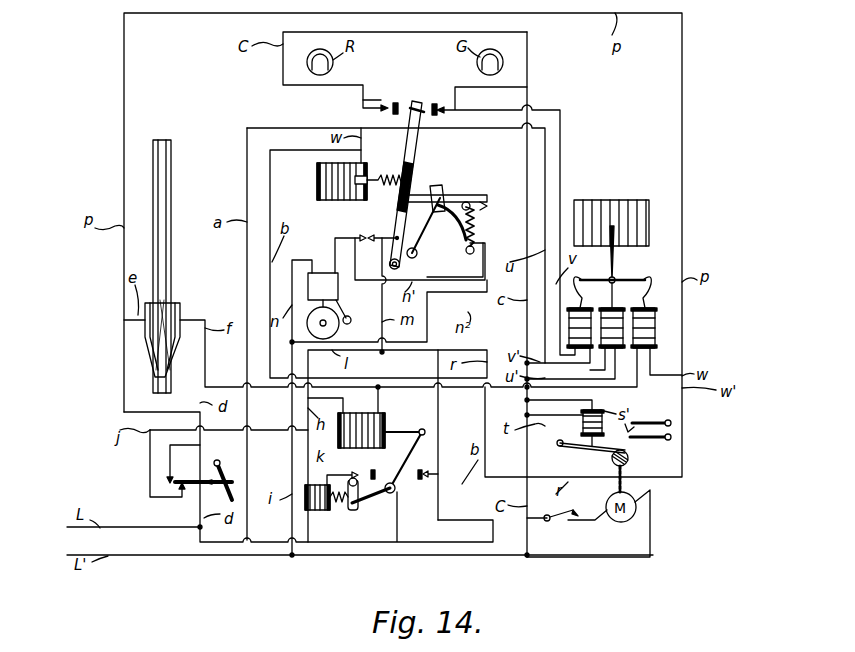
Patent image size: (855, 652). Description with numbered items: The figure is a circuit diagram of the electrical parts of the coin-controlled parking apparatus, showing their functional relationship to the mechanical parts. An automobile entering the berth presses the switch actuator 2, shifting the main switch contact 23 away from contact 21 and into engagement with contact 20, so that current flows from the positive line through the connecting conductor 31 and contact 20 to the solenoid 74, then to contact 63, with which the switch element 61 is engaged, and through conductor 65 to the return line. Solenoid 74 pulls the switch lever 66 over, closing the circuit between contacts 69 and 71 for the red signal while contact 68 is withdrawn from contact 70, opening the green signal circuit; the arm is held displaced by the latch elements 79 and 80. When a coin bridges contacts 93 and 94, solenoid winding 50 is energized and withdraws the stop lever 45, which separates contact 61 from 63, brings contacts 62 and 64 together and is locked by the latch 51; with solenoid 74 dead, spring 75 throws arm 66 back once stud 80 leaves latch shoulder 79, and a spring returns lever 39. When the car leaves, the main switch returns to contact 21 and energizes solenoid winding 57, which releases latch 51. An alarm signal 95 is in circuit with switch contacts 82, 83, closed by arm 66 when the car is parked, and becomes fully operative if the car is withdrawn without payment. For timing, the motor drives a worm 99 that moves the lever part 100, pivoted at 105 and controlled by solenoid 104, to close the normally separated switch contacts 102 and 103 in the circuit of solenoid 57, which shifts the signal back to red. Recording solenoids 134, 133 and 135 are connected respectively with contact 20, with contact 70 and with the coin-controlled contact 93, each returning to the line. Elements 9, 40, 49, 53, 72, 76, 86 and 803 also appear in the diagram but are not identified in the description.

The switch actuator 2 is at (232, 484).
The conductor 9 is at (382, 400).
The contact 20 is at (162, 478).
The main switch contact 21 is at (182, 490).
The main switch contact 23 is at (170, 498).
The connecting conductor 31 is at (150, 456).
The lever 39 is at (414, 255).
The spring anchor 40 is at (470, 252).
The stop lever 45 is at (428, 440).
The lever arm 49 is at (405, 432).
The solenoid winding 50 is at (360, 413).
The latch 51 is at (352, 512).
The lever 53 is at (372, 500).
The solenoid winding 57 is at (315, 512).
The switch element 61 is at (398, 490).
The contact 62 is at (376, 472).
The contact 63 is at (425, 476).
The contact 64 is at (350, 474).
The conductor 65 is at (397, 522).
The switch lever 66 is at (410, 153).
The contact 68 is at (424, 108).
The contact 69 is at (398, 102).
The contact 70 is at (442, 100).
The contact 71 is at (382, 106).
The conductor 72 is at (418, 118).
The solenoid 74 is at (317, 186).
The spring 75 is at (381, 175).
The bar 76 is at (470, 196).
The latch shoulder 79 is at (436, 180).
The stud 80 is at (460, 232).
The switch contact 82 is at (382, 234).
The switch contact 83 is at (350, 234).
The tube 86 is at (160, 282).
The contact 93 is at (170, 355).
The contact 94 is at (148, 348).
The alarm signal 95 is at (340, 312).
The worm 99 is at (628, 462).
The lever part 100 is at (600, 450).
The switch contact 102 is at (640, 441).
The switch contact 103 is at (668, 427).
The solenoid 104 is at (583, 428).
The pivot 105 is at (560, 448).
The solenoid 133 is at (569, 332).
The solenoid 134 is at (623, 328).
The solenoid 135 is at (655, 344).
The spring 803 is at (478, 220).